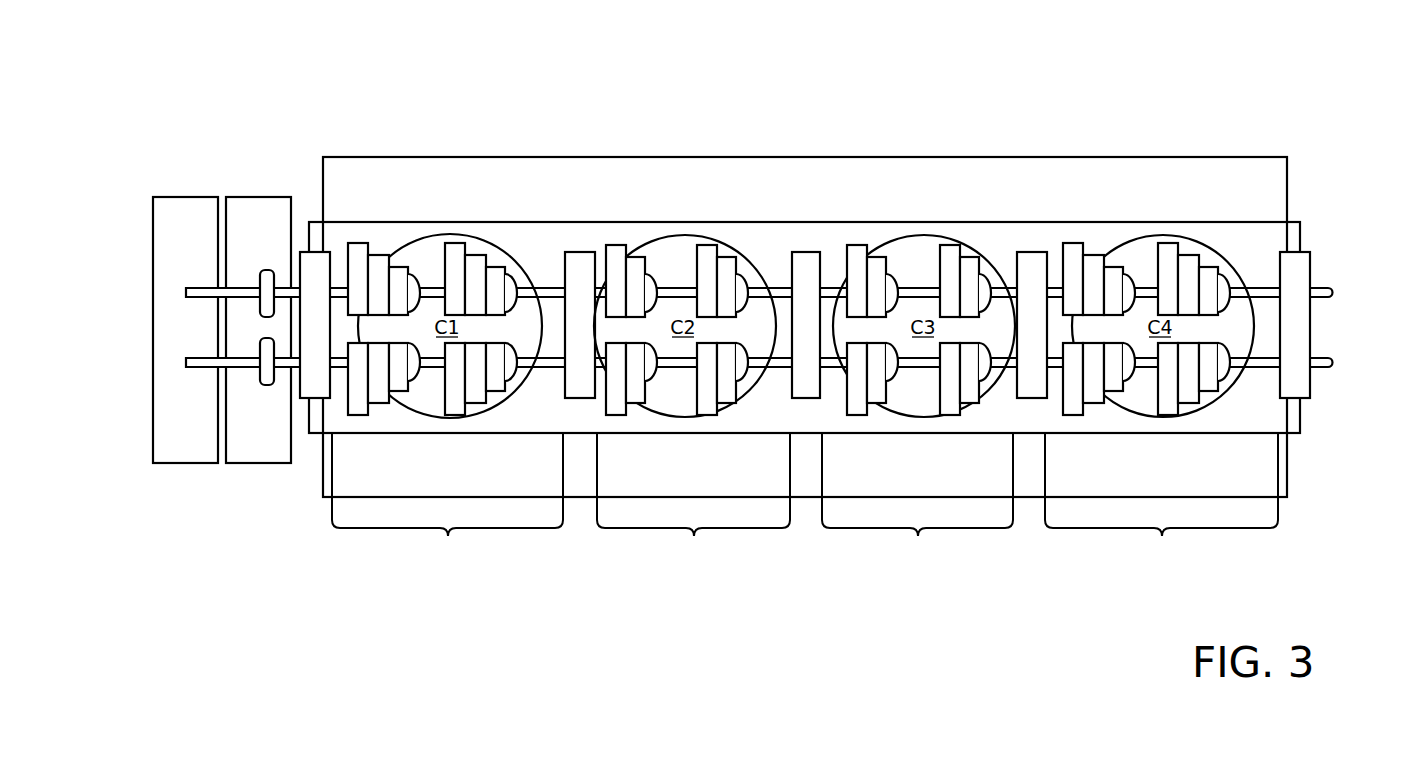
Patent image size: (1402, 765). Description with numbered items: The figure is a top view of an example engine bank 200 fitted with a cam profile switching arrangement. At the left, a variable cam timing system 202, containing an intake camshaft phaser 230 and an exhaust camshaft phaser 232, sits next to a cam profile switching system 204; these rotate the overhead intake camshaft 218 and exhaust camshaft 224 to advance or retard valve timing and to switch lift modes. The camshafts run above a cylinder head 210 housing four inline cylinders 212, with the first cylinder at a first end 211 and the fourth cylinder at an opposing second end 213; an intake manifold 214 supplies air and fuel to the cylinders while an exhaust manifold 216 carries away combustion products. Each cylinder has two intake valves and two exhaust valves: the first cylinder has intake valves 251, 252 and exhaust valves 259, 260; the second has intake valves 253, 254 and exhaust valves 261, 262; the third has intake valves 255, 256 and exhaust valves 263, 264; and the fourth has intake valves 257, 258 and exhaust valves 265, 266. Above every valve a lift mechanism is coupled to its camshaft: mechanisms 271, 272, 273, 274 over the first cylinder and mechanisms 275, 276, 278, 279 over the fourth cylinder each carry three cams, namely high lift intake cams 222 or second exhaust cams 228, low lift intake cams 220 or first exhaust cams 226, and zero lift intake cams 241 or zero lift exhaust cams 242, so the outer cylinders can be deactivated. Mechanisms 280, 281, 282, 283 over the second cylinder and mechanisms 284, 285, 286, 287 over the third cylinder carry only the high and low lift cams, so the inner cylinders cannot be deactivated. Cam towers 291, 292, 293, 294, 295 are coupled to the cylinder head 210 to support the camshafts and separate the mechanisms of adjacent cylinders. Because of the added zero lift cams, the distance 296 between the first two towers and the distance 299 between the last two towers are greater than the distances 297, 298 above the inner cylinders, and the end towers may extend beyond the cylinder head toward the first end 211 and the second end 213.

The engine bank 200 is at (1222, 77).
The variable cam timing (VCT) system 202 is at (183, 197).
The cam profile switching (CPS) system 204 is at (258, 197).
The cylinder head 210 is at (1300, 222).
The first end 211 is at (136, 322).
The cylinders 212 is at (513, 403).
The second end 213 is at (1341, 328).
The intake manifold 214 is at (1222, 157).
The exhaust manifold 216 is at (1213, 497).
The intake camshaft 218 is at (283, 295).
The low lift intake cams 220 is at (375, 267).
The high lift intake cams 222 is at (360, 257).
The exhaust camshaft 224 is at (283, 370).
The first exhaust cams 226 is at (378, 405).
The second exhaust cams 228 is at (357, 418).
The intake camshaft phaser 230 is at (266, 270).
The exhaust camshaft phaser 232 is at (270, 385).
The zero lift intake cams 241 is at (397, 278).
The zero lift exhaust cams 242 is at (402, 385).
The intake valve 251 is at (415, 275).
The intake valve 252 is at (507, 275).
The intake valve 253 is at (650, 280).
The intake valve 254 is at (745, 282).
The intake valve 255 is at (897, 280).
The intake valve 256 is at (985, 275).
The intake valve 257 is at (1128, 270).
The intake valve 258 is at (1213, 276).
The exhaust valve 259 is at (406, 343).
The exhaust valve 260 is at (505, 345).
The exhaust valve 261 is at (650, 345).
The exhaust valve 262 is at (744, 347).
The exhaust valve 263 is at (892, 345).
The exhaust valve 264 is at (988, 350).
The exhaust valve 265 is at (1123, 345).
The exhaust valve 266 is at (1230, 350).
The lift mechanism 271 is at (384, 279).
The lift mechanism 272 is at (481, 279).
The lift mechanism 273 is at (384, 379).
The lift mechanism 274 is at (481, 379).
The lift mechanism 275 is at (1099, 279).
The lift mechanism 276 is at (1194, 279).
The lift mechanism 278 is at (1099, 379).
The lift mechanism 279 is at (1194, 379).
The lift mechanism 280 is at (631, 281).
The lift mechanism 281 is at (722, 281).
The lift mechanism 282 is at (631, 379).
The lift mechanism 283 is at (722, 379).
The lift mechanism 284 is at (872, 281).
The lift mechanism 285 is at (965, 281).
The lift mechanism 286 is at (872, 379).
The lift mechanism 287 is at (965, 379).
The cam tower 291 is at (315, 325).
The cam tower 292 is at (580, 325).
The cam tower 293 is at (806, 325).
The cam tower 294 is at (1032, 325).
The cam tower 295 is at (1295, 325).
The distance 296 is at (447, 500).
The distance 297 is at (693, 500).
The distance 298 is at (917, 500).
The distance 299 is at (1161, 498).